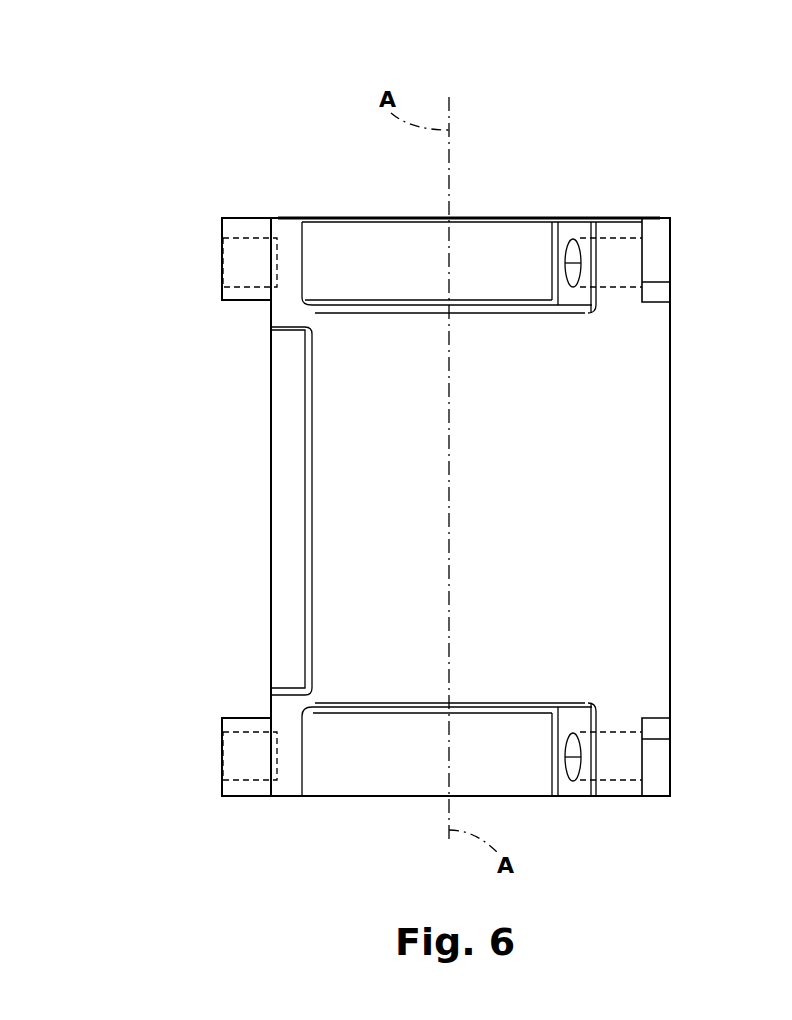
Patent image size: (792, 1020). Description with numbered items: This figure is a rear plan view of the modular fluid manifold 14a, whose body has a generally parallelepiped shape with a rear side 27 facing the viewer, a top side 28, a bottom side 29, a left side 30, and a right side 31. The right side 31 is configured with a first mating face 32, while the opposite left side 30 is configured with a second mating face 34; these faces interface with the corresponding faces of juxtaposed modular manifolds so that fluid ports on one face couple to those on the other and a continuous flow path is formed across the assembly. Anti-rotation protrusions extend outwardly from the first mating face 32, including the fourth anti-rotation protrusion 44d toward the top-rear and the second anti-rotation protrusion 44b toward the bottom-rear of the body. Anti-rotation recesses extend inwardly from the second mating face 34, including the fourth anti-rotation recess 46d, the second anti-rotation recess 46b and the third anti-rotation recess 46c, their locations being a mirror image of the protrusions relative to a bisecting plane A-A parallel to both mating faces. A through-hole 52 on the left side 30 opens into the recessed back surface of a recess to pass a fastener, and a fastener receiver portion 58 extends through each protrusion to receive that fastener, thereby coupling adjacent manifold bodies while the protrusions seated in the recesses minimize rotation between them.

The modular fluid manifold 14a is at (160, 160).
The rear side 27 is at (480, 373).
The top side 28 is at (428, 217).
The bottom side 29 is at (365, 797).
The left side 30 is at (791, 460).
The right side 31 is at (271, 585).
The first mating face 32 is at (225, 420).
The second mating face 34 is at (698, 335).
The fourth anti-rotation protrusion 44d is at (195, 243).
The second anti-rotation protrusion 44b is at (197, 773).
The fourth anti-rotation recess 46d is at (678, 240).
The second anti-rotation recess 46b is at (685, 785).
The third anti-rotation recess 46c is at (791, 232).
The through-hole 52 is at (613, 258).
The fastener receiver portion 58 is at (250, 258).